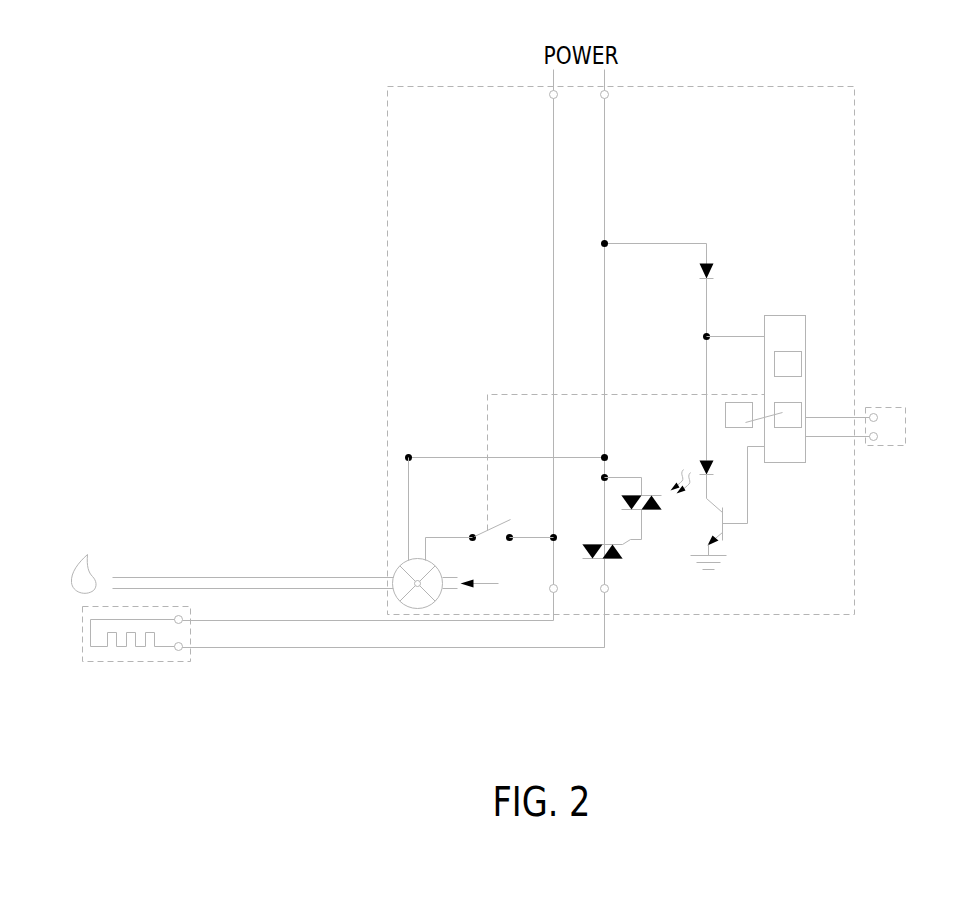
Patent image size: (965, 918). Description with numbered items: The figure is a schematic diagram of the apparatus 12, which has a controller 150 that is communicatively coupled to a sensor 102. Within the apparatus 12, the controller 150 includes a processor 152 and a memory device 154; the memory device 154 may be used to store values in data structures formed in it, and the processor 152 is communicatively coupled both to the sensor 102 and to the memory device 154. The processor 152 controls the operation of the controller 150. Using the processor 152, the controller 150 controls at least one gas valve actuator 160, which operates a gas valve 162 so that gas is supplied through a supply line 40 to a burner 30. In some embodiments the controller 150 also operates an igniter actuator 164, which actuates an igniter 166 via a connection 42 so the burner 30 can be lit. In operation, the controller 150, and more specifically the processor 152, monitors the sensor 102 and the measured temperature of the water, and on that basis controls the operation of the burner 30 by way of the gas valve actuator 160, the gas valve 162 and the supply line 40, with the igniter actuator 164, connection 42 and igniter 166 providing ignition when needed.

The apparatus 12 is at (433, 86).
The burner 30 is at (108, 548).
The supply line 40 is at (348, 590).
The connection 42 is at (258, 647).
The sensor 102 is at (890, 447).
The controller 150 is at (818, 360).
The processor 152 is at (801, 353).
The memory device 154 is at (801, 402).
The gas valve actuator 160 is at (487, 530).
The gas valve 162 is at (402, 565).
The igniter actuator 164 is at (742, 525).
The igniter 166 is at (155, 661).